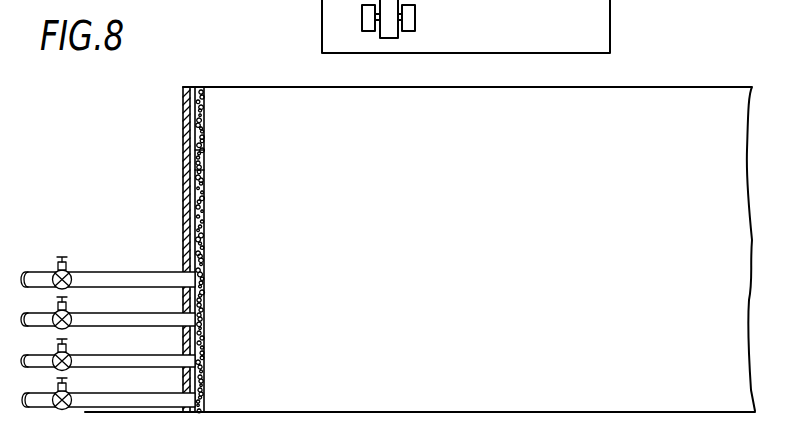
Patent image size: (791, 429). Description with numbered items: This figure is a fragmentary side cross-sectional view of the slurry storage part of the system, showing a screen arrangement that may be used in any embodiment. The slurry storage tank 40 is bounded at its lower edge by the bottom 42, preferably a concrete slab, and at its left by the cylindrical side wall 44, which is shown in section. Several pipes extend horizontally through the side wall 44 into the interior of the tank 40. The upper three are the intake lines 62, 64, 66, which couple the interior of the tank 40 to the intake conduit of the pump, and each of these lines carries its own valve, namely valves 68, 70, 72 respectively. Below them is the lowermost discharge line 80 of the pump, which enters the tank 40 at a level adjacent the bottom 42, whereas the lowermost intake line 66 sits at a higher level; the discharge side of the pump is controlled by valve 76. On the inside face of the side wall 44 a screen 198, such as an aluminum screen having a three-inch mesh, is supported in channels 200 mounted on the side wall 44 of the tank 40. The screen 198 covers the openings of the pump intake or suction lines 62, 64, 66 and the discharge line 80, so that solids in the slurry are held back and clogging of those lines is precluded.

The slurry storage tank 40 is at (471, 168).
The bottom 42 is at (284, 410).
The side wall 44 is at (182, 141).
The intake line 62 is at (135, 271).
The intake line 64 is at (142, 318).
The intake line 66 is at (133, 360).
The valve 68 is at (68, 271).
The valve 70 is at (68, 316).
The valve 72 is at (68, 357).
The valve 76 is at (69, 396).
The discharge line 80 is at (121, 402).
The screen 198 is at (204, 222).
The channels 200 is at (204, 168).